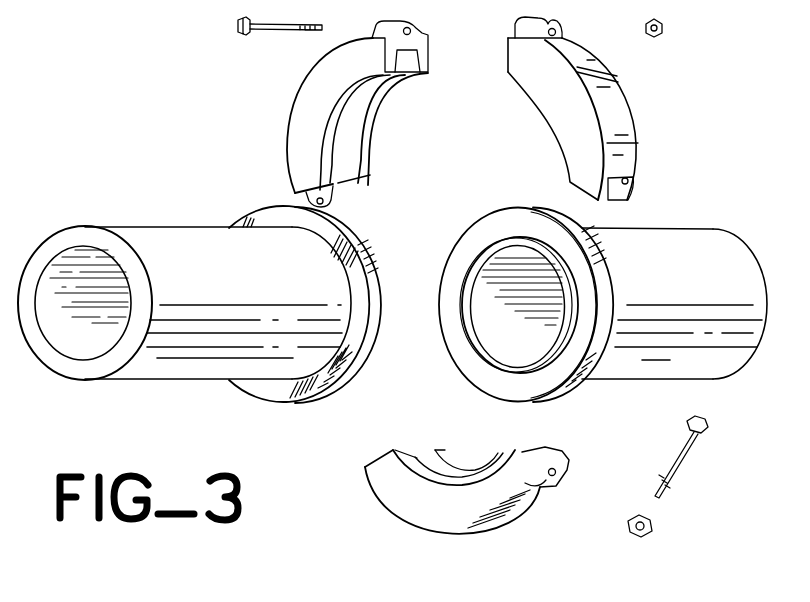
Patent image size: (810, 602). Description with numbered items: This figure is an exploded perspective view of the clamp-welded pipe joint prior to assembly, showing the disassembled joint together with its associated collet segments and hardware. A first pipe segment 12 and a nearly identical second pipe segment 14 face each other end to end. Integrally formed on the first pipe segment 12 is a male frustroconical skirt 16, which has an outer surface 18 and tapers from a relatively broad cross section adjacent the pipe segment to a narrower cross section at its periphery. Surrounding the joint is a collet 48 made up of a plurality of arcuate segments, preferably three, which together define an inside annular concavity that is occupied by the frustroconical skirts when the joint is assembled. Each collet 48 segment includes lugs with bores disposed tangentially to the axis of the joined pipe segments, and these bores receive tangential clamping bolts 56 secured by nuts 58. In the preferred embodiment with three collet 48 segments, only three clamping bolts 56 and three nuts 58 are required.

The first pipe segment 12 is at (127, 225).
The second pipe segment 14 is at (673, 232).
The male frustroconical skirt 16 is at (267, 222).
The outer surface 18 is at (573, 393).
The collet 48 is at (302, 127).
The clamping bolts 56 is at (237, 25).
The nuts 58 is at (663, 23).